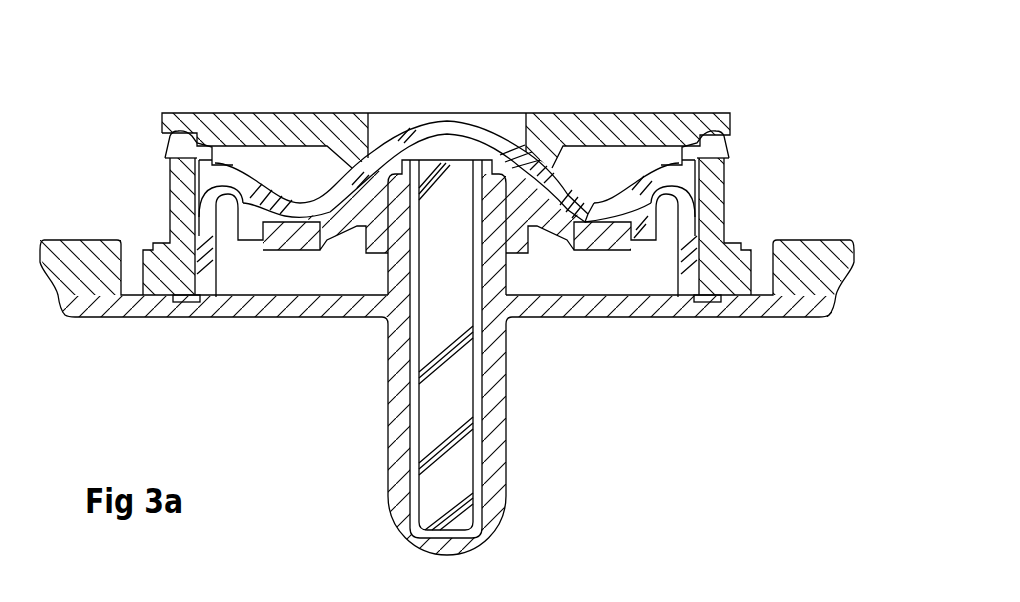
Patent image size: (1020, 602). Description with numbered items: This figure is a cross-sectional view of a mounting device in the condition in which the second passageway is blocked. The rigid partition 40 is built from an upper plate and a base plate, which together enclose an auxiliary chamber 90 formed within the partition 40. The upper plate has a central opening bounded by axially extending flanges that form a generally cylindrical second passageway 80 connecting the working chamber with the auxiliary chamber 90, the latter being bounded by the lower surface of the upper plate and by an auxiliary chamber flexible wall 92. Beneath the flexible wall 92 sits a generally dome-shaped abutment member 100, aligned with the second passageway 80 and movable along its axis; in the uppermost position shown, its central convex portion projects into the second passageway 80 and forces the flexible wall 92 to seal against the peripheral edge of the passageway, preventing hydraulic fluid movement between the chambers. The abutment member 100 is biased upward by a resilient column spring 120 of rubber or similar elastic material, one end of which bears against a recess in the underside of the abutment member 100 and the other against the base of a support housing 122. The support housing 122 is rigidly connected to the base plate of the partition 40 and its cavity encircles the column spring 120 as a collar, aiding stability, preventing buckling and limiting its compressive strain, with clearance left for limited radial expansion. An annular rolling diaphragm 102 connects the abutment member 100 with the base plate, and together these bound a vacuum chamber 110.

The partition 40 is at (803, 273).
The second passageway 80 is at (512, 132).
The auxiliary chamber 90 is at (290, 158).
The auxiliary chamber flexible wall 92 is at (576, 170).
The abutment member 100 is at (312, 222).
The rolling diaphragm 102 is at (683, 200).
The vacuum chamber 110 is at (338, 268).
The resilient column spring 120 is at (447, 428).
The support housing 122 is at (487, 483).